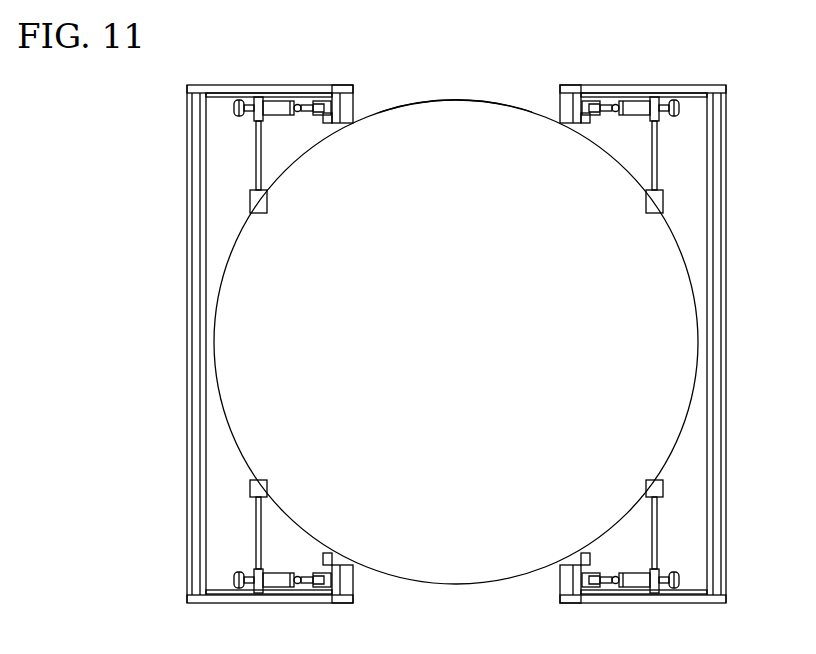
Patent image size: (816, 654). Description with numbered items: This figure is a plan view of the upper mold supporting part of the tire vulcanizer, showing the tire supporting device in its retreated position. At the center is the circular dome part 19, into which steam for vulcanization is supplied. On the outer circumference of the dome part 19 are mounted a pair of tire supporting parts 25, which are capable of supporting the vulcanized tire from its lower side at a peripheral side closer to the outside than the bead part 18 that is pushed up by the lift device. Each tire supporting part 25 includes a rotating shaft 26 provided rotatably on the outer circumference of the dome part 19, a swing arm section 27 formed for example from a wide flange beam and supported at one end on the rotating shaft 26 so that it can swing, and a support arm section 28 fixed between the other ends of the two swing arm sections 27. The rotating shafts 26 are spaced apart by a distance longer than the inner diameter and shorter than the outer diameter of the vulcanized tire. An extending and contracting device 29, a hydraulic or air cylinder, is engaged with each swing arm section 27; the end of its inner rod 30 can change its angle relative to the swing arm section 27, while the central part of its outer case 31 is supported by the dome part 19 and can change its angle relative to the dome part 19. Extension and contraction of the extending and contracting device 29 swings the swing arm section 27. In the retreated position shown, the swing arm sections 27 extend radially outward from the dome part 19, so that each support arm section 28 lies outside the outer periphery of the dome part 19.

The bead part 18 is at (693, 309).
The circular dome part 19 is at (447, 95).
The tire supporting part 25 is at (185, 263).
The rotating shaft 26 is at (352, 92).
The swing arm section 27 is at (218, 86).
The support arm section 28 is at (194, 124).
The extending and contracting device 29 is at (277, 128).
The inner rod 30 is at (298, 100).
The outer case 31 is at (261, 98).